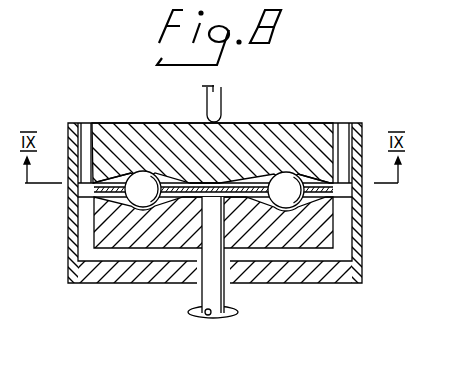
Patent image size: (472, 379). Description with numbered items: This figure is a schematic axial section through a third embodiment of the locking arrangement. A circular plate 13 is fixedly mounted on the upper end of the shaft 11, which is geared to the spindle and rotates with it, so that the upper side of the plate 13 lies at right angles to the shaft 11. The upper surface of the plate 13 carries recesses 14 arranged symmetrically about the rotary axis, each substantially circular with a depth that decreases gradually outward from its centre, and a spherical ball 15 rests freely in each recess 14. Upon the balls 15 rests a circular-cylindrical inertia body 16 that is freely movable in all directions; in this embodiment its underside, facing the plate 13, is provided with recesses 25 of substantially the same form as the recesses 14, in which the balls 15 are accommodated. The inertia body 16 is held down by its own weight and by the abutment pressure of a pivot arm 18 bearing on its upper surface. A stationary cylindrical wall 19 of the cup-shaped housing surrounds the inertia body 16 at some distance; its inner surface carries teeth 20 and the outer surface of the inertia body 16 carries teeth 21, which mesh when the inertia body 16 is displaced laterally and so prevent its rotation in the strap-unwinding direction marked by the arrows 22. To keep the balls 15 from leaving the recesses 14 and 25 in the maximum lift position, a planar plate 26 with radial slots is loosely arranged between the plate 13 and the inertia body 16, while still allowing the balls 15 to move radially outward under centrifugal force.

The shaft 11 is at (201, 286).
The circular plate 13 is at (298, 240).
The recesses 14 is at (134, 198).
The spherical ball 15 is at (132, 189).
The inertia body 16 is at (276, 132).
The pivot arm 18 is at (207, 88).
The cylindrical wall 19 is at (72, 238).
The teeth 20 is at (81, 123).
The teeth 21 is at (92, 123).
The arrows 22 is at (240, 311).
The recesses 25 is at (127, 170).
The planar plate 26 is at (222, 182).